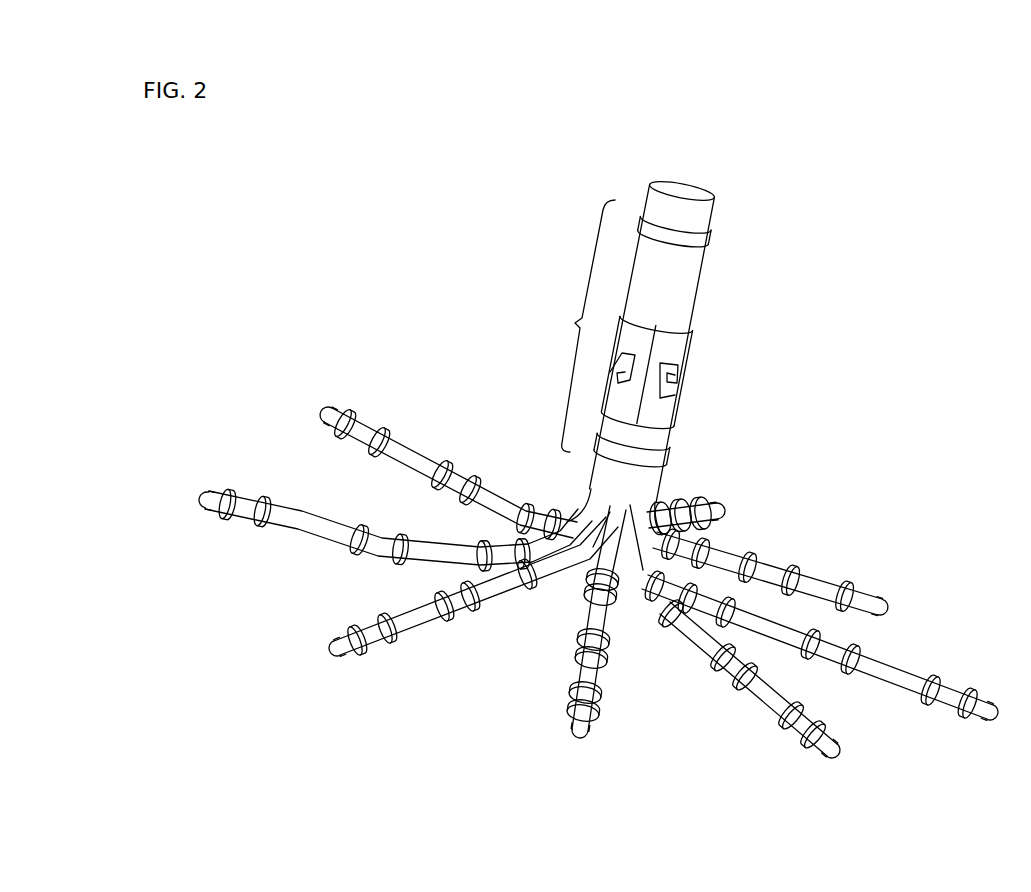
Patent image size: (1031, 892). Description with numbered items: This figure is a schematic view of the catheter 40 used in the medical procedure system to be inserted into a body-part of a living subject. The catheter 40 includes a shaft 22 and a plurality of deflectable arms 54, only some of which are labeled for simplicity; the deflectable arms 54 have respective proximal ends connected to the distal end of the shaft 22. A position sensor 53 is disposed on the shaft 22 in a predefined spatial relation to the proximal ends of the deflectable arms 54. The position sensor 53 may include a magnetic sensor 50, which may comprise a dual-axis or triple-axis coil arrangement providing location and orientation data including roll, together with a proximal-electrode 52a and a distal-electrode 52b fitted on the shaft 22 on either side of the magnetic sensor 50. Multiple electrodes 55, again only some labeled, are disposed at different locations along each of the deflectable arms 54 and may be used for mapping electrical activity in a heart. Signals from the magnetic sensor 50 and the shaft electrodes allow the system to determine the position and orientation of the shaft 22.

The catheter 40 is at (386, 285).
The shaft 22 is at (700, 295).
The proximal-electrode 52a is at (712, 230).
The distal-electrode 52b is at (700, 450).
The magnetic sensor 50 is at (690, 398).
The position sensor 53 is at (568, 326).
The deflectable arms 54 is at (330, 645).
The electrodes 55 is at (975, 690).